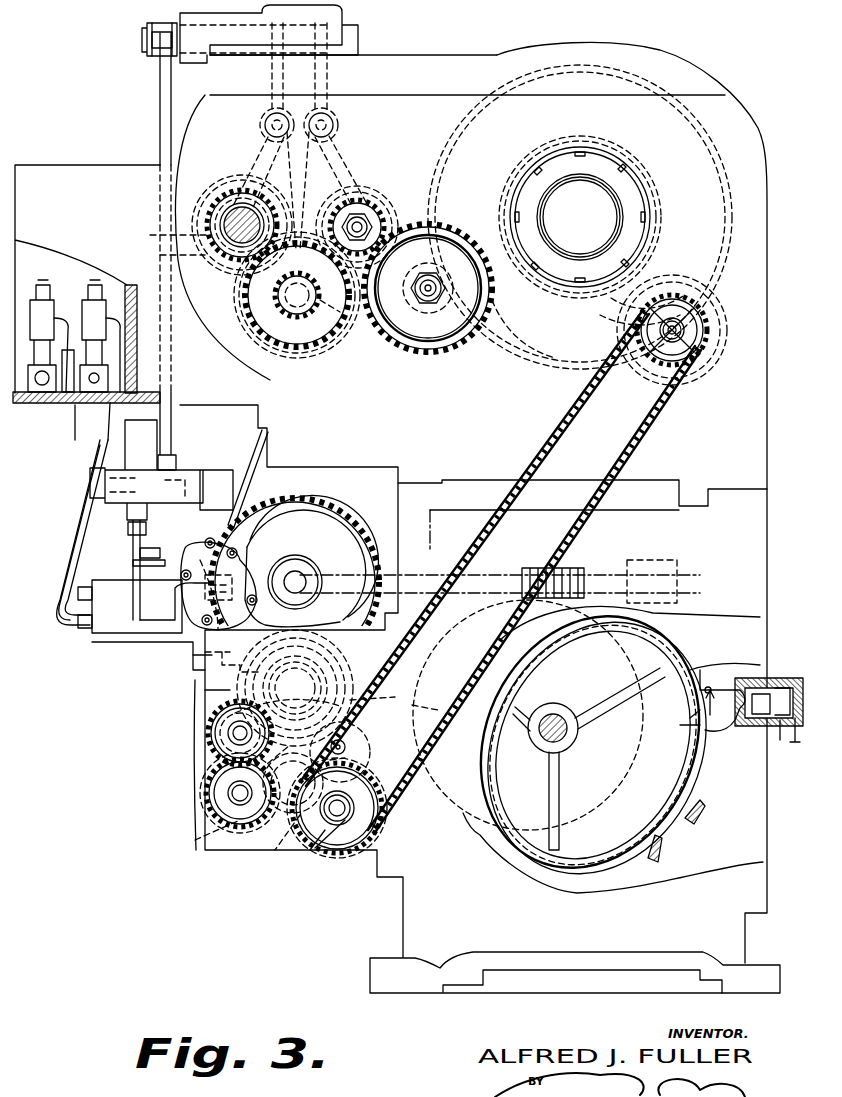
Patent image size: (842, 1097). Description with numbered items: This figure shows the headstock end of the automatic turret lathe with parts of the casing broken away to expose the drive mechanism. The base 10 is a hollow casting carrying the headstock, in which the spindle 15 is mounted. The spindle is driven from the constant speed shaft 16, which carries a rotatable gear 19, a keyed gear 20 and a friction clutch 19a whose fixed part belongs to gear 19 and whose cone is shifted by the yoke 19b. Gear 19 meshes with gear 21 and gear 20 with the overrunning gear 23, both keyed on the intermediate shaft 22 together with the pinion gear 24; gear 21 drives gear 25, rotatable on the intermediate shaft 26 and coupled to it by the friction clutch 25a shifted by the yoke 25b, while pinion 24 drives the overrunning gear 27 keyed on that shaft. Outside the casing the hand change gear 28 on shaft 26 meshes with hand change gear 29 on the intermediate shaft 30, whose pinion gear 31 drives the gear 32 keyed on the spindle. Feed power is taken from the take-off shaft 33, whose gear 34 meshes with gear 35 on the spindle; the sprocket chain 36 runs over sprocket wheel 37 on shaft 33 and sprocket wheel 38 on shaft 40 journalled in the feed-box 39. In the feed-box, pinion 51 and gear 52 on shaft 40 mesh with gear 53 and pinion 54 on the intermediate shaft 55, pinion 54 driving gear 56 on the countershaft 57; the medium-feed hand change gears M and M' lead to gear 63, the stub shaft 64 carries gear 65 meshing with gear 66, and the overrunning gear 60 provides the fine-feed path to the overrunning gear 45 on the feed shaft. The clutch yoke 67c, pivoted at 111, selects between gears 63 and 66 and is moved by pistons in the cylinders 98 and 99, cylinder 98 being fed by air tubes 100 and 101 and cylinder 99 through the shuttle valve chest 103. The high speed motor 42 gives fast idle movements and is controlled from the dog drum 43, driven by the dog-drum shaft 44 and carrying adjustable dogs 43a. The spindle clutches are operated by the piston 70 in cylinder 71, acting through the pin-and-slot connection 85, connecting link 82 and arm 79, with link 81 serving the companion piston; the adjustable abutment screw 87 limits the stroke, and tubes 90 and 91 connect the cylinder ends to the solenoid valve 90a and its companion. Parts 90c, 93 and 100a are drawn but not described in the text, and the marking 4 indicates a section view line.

The base or bed 10 is at (397, 499).
The spindle 15 is at (620, 260).
The constant speed shaft 16 is at (245, 205).
The gear 19 is at (225, 262).
The friction clutch 19a is at (202, 225).
The yoke member 19b is at (264, 125).
The gear 20 is at (212, 225).
The gear 21 is at (248, 305).
The intermediate shaft 22 is at (316, 340).
The overrunning gear 23 is at (244, 322).
The pinion gear 24 is at (282, 356).
The gear 25 is at (436, 200).
The friction clutch 25a is at (385, 200).
The yoke member 25b is at (335, 118).
The intermediate shaft 26 is at (352, 210).
The overrunning gear 27 is at (337, 330).
The gear 28 is at (362, 215).
The gear 29 is at (432, 352).
The intermediate shaft 30 is at (420, 302).
The pinion gear 31 is at (434, 304).
The gear 32 is at (515, 355).
The take-off shaft 33 is at (700, 300).
The gear 34 is at (670, 262).
The gear 35 is at (660, 232).
The sprocket chain 36 is at (648, 432).
The sprocket wheel 37 is at (700, 340).
The sprocket wheel 38 is at (312, 855).
The transmission feed-box 39 is at (205, 695).
The shaft 40 is at (355, 815).
The high speed motor 42 is at (311, 561).
The control dog drum 43 is at (660, 665).
The dogs 43a is at (690, 800).
The dog-drum shaft 44 is at (480, 572).
The overrunning gear 45 is at (312, 500).
The pinion 51 is at (350, 795).
The gear 52 is at (345, 855).
The gear 53 is at (268, 850).
The pinion 54 is at (252, 826).
The intermediate shaft 55 is at (293, 783).
The gear 56 is at (215, 830).
The countershaft 57 is at (230, 800).
The overrunning gear 60 is at (355, 640).
The gear 63 is at (380, 700).
The stub shaft 64 is at (347, 745).
The gear 65 is at (348, 748).
The gear 66 is at (340, 672).
The clutch yoke 67c is at (248, 672).
The piston 70 is at (146, 525).
The cylinder 71 is at (100, 618).
The laterally extending arm 79 is at (150, 56).
The connecting link 81 is at (173, 80).
The connecting link 82 is at (155, 62).
The pin and slot connection 85 is at (92, 500).
The adjustable abutment 87 is at (100, 463).
The tube 90 is at (52, 620).
The solenoid operated valve 90a is at (60, 392).
The lever 90c is at (745, 760).
The tube 91 is at (78, 588).
The pipe 93 is at (60, 410).
The cylinder 98 is at (190, 600).
The cylinder 99 is at (205, 540).
The air supply tube 100 is at (166, 601).
The pipe 100a is at (76, 422).
The air supply tube 101 is at (155, 544).
The shuttle valve chest 103 is at (153, 567).
The pivot 111 is at (186, 655).
The gear M is at (207, 793).
The gear M' is at (206, 733).
The section line of FIG. 4 is at (195, 170).